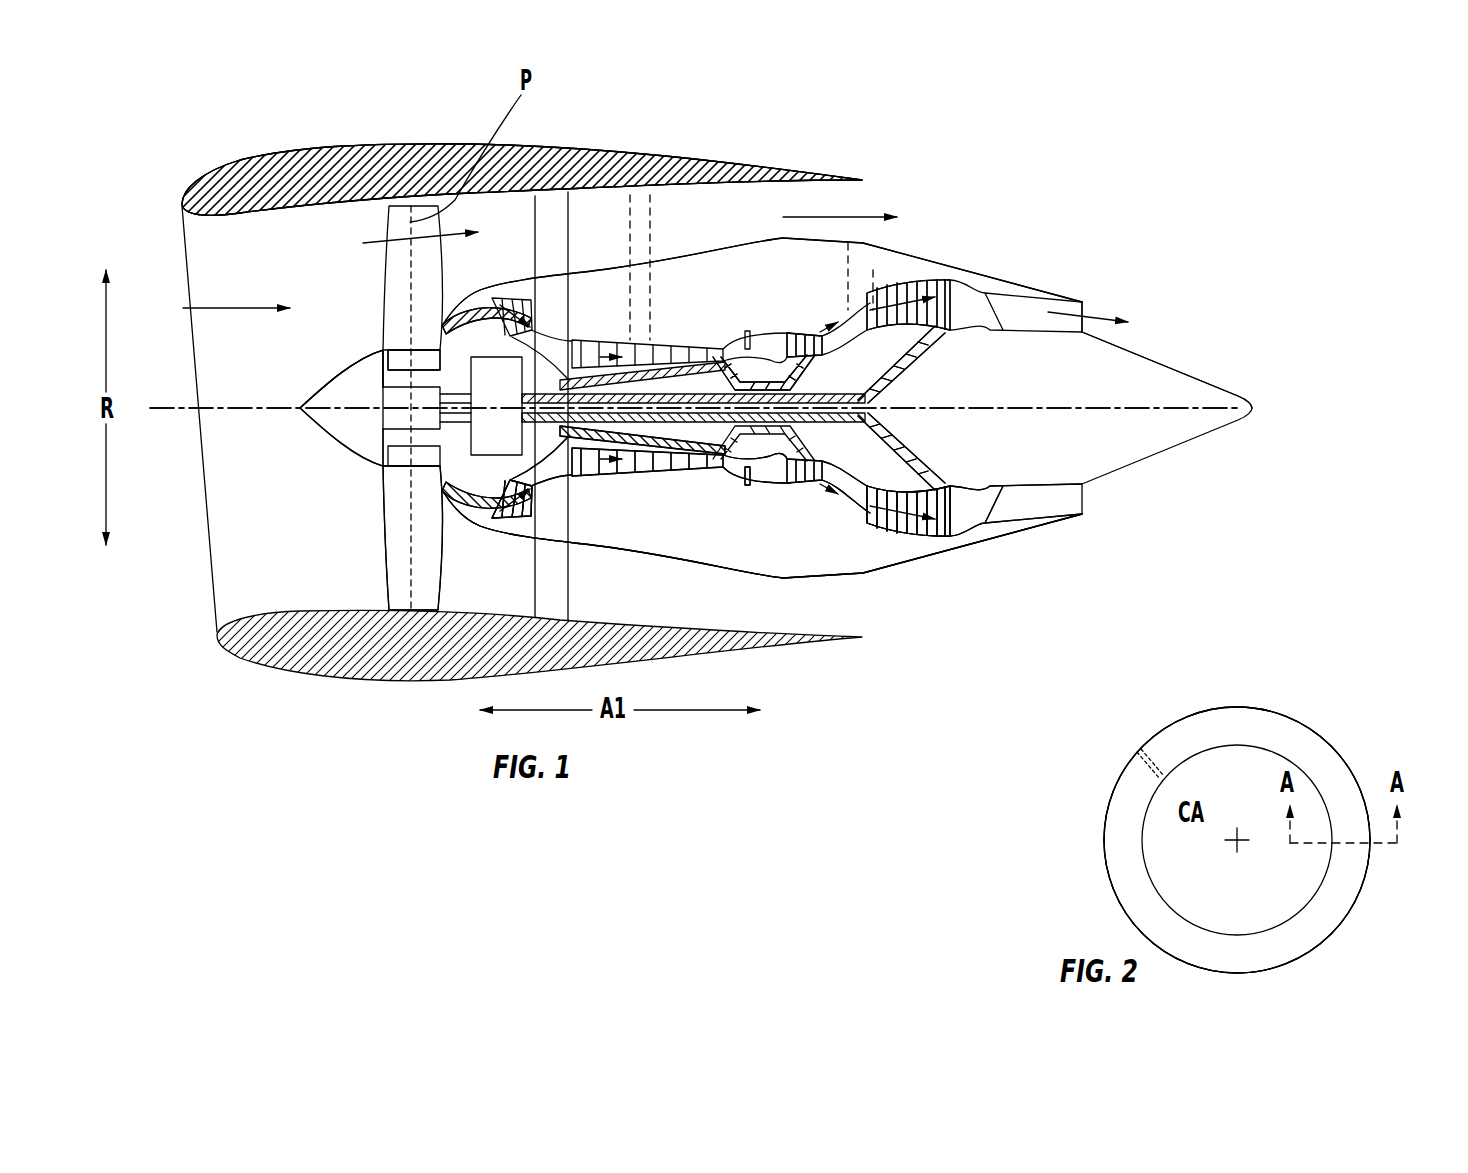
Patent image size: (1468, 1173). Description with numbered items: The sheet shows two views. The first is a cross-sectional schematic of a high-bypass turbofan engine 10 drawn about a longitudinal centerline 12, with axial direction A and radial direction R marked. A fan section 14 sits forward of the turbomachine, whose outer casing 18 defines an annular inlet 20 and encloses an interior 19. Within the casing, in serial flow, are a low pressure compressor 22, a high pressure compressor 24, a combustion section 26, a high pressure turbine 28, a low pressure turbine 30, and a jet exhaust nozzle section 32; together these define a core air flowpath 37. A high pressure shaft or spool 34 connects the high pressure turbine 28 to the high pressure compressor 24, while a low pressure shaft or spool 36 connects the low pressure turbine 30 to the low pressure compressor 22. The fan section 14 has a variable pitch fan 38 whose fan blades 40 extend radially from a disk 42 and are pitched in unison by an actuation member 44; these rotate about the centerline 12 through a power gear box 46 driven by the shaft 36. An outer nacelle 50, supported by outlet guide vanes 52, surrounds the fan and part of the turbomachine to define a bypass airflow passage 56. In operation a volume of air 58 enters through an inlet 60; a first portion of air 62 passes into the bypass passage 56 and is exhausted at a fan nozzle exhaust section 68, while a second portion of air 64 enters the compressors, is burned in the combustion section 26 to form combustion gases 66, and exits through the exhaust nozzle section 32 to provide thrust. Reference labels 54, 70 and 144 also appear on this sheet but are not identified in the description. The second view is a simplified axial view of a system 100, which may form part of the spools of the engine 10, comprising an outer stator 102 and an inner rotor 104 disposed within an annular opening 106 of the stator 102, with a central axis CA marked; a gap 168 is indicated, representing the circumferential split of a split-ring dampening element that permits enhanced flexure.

In FIG. 1, the turbofan engine 10 is at (1000, 160).
In FIG. 1, the longitudinal centerline 12 is at (1163, 407).
In FIG. 1, the fan section 14 is at (380, 210).
In FIG. 1, the outer casing 18 is at (723, 571).
In FIG. 1, the interior 19 is at (855, 557).
In FIG. 1, the annular inlet 20 is at (485, 508).
In FIG. 1, the low pressure compressor 22 is at (536, 486).
In FIG. 1, the high pressure compressor 24 is at (600, 466).
In FIG. 1, the combustion section 26 is at (767, 476).
In FIG. 1, the high pressure turbine 28 is at (907, 466).
In FIG. 1, the low pressure turbine 30 is at (942, 534).
In FIG. 1, the jet exhaust nozzle section 32 is at (1002, 510).
In FIG. 1, the high pressure shaft or spool 34 is at (768, 384).
In FIG. 1, the low pressure shaft or spool 36 is at (897, 367).
In FIG. 1, the core air flowpath 37 is at (570, 479).
In FIG. 1, the variable pitch fan 38 is at (350, 462).
In FIG. 1, the fan blades 40 is at (383, 553).
In FIG. 1, the disk 42 is at (403, 365).
In FIG. 1, the actuation member 44 is at (383, 388).
In FIG. 1, the power gear box 46 is at (514, 374).
In FIG. 1, the outer nacelle 50 is at (431, 676).
In FIG. 1, the outlet guide vanes 52 is at (570, 224).
In FIG. 1, the nacelle 54 is at (790, 167).
In FIG. 1, the bypass airflow passage 56 is at (691, 239).
In FIG. 1, the volume of air 58 is at (230, 307).
In FIG. 1, the inlet 60 is at (210, 602).
In FIG. 1, the first portion of air 62 is at (405, 234).
In FIG. 1, the second portion of air 64 is at (472, 292).
In FIG. 1, the combustion gases 66 is at (807, 333).
In FIG. 1, the fan nozzle exhaust section 68 is at (850, 202).
In FIG. 1, the reference plane 70 is at (633, 280).
In FIG. 1, the fan hub 144 is at (302, 412).
In FIG. 2, the system 100 is at (1070, 800).
In FIG. 2, the stator 102 is at (1082, 840).
In FIG. 2, the rotor 104 is at (1277, 882).
In FIG. 2, the annular opening 106 is at (1302, 742).
In FIG. 2, the gap 168 is at (1147, 772).